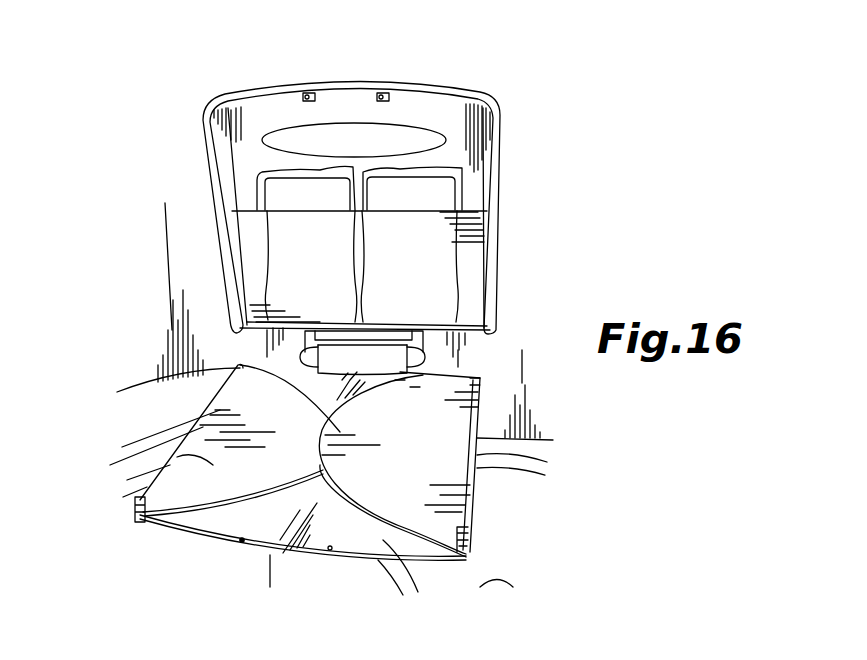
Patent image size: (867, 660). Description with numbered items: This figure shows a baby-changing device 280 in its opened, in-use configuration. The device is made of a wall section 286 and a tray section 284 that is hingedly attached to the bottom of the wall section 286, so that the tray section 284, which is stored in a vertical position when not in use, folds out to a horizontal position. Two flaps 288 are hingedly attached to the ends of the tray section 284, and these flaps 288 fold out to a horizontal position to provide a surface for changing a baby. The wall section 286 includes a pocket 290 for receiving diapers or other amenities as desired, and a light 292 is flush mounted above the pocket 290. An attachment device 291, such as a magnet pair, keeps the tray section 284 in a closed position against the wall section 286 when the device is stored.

The baby-changing device 280 is at (618, 85).
The tray section 284 is at (420, 557).
The wall section 286 is at (467, 132).
The flaps 288 is at (205, 453).
The pocket 290 is at (467, 280).
The attachment device 291 is at (307, 93).
The light 292 is at (302, 138).